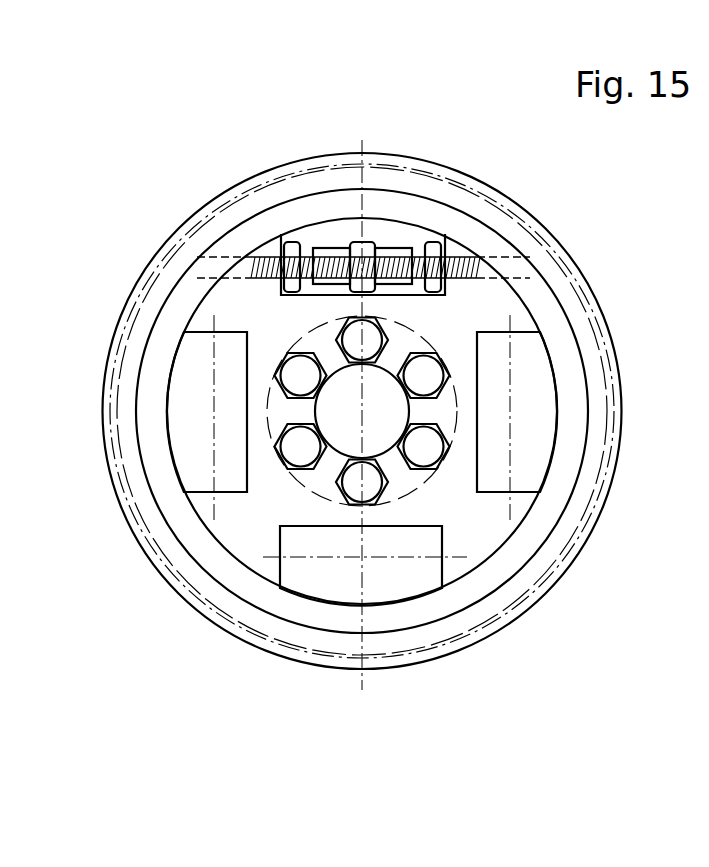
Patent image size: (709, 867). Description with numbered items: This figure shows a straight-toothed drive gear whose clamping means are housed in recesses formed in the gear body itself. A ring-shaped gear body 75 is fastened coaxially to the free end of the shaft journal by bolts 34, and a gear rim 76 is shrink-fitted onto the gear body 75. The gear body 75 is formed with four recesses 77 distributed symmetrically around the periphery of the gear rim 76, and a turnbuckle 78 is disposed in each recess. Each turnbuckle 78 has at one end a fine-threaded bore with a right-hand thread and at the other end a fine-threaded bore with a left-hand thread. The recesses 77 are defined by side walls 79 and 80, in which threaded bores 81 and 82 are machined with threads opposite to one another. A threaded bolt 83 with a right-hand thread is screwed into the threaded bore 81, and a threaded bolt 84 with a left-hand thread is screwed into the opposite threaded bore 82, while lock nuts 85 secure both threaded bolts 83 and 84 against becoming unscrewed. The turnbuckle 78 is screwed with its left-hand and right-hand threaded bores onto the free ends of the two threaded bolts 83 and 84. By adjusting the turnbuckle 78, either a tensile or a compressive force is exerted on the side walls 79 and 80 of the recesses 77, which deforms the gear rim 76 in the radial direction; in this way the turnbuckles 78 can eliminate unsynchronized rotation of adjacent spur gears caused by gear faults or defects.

The bolts 34 is at (427, 452).
The gear body 75 is at (570, 428).
The gear rim 76 is at (522, 237).
The recesses 77 is at (533, 370).
The turnbuckle 78 is at (360, 243).
The side wall 79 is at (447, 248).
The side wall 80 is at (283, 248).
The threaded bore 81 is at (527, 272).
The threaded bore 82 is at (200, 268).
The threaded bolt 83 is at (417, 250).
The threaded bolt 84 is at (303, 252).
The lock nuts 85 is at (283, 245).